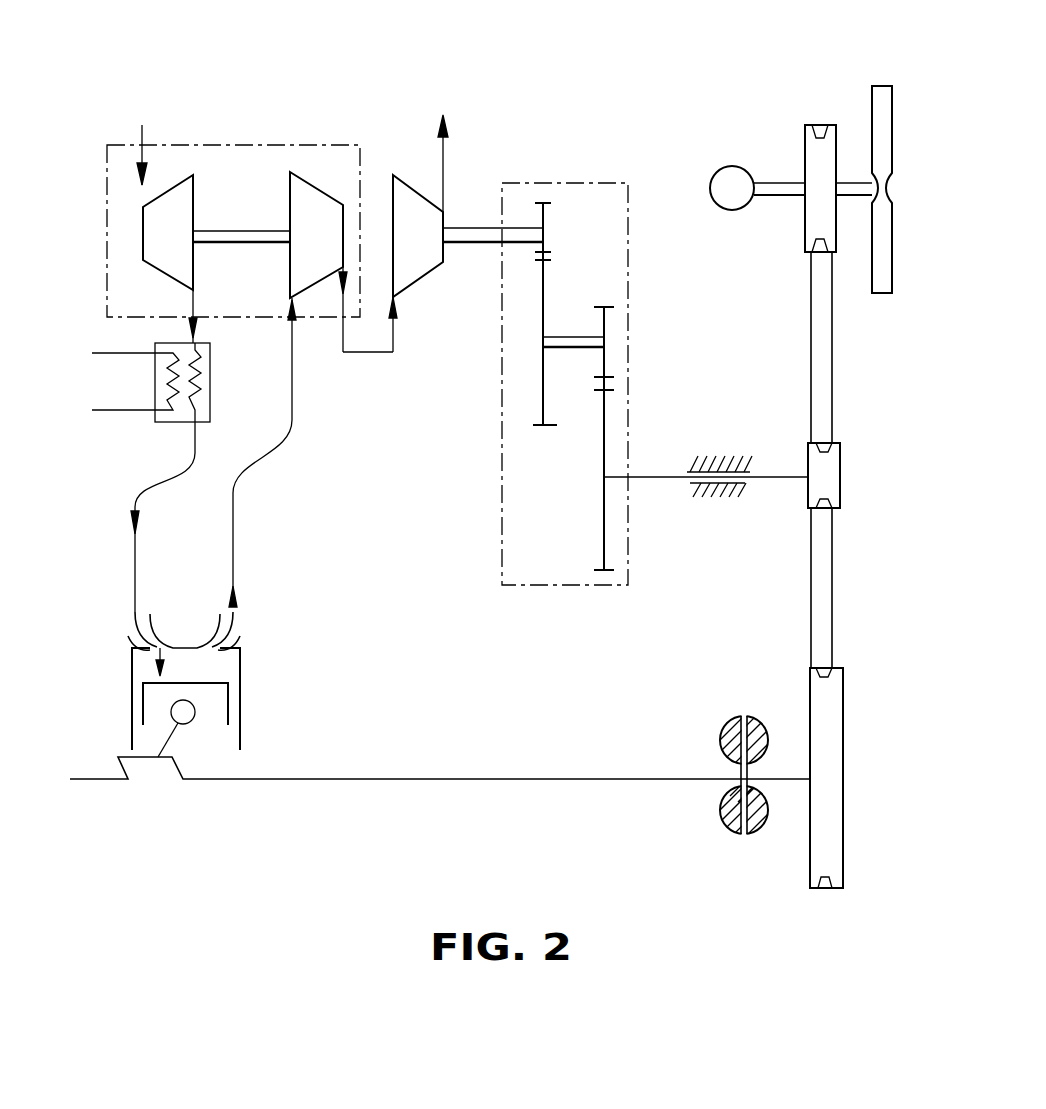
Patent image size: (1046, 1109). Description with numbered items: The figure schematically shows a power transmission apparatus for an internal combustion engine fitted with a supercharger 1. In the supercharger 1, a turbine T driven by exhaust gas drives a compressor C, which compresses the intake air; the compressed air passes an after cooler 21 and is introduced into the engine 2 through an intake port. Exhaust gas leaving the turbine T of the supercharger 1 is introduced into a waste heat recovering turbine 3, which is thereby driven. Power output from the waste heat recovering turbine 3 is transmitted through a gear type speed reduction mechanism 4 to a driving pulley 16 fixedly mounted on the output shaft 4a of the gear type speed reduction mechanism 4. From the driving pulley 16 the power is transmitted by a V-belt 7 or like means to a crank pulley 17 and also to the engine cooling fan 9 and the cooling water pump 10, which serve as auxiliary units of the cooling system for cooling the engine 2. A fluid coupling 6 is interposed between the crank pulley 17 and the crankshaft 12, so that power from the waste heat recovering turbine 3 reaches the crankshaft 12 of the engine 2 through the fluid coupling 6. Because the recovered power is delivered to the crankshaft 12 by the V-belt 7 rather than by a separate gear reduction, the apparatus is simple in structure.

The supercharger 1 is at (243, 146).
The engine 2 is at (132, 672).
The waste heat recovering turbine 3 is at (400, 183).
The gear type speed reduction mechanism 4 is at (557, 183).
The output shaft 4a is at (675, 480).
The fluid coupling 6 is at (731, 720).
The V-belt 7 is at (825, 592).
The engine cooling fan 9 is at (872, 105).
The cooling water pump 10 is at (735, 166).
The crankshaft 12 is at (495, 779).
The driving pulley 16 is at (830, 470).
The crank pulley 17 is at (830, 735).
The after cooler 21 is at (155, 422).